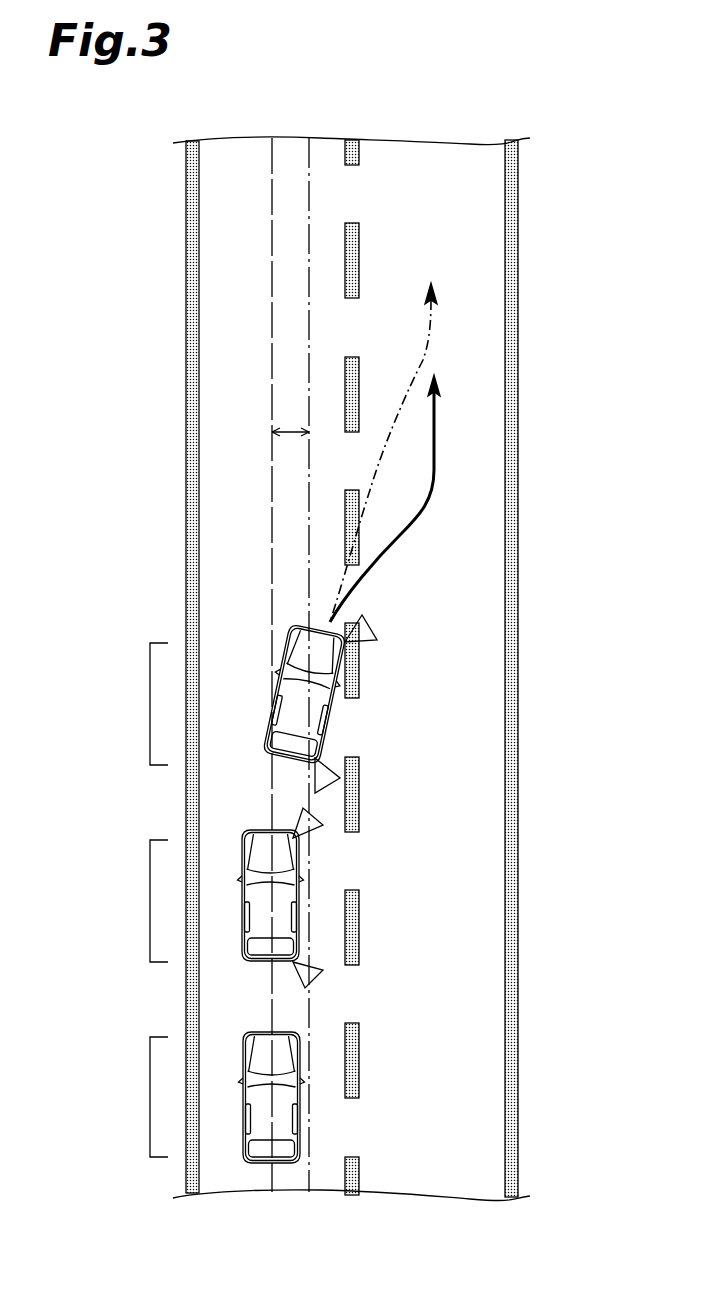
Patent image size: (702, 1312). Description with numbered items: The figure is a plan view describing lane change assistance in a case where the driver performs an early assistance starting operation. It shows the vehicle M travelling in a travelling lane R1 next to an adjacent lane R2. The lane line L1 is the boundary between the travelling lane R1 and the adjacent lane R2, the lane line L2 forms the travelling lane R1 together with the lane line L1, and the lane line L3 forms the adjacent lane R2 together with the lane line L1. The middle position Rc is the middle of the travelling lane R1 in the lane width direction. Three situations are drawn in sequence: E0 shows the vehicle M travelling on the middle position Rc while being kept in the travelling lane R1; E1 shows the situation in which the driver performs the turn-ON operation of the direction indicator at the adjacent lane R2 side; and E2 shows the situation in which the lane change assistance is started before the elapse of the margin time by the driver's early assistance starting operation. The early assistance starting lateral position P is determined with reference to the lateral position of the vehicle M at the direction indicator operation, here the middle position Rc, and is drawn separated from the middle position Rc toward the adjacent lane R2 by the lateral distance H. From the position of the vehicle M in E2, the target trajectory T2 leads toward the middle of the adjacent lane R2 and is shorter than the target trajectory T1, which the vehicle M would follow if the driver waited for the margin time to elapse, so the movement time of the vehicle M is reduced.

The travelling lane R1 is at (228, 150).
The adjacent lane R2 is at (470, 160).
The early assistance starting lateral position P is at (308, 176).
The middle position Rc is at (272, 254).
The lane line (lane boundary line) L1 is at (360, 241).
The lane line (roadway traffic zone boundary line) L2 is at (186, 325).
The lane line (middle line) L3 is at (518, 243).
The target trajectory T1 is at (434, 316).
The target trajectory T2 is at (437, 440).
The lateral distance H is at (290, 419).
The vehicle M is at (330, 715).
The situation E0 is at (150, 1095).
The situation E1 is at (150, 897).
The situation E2 is at (150, 698).